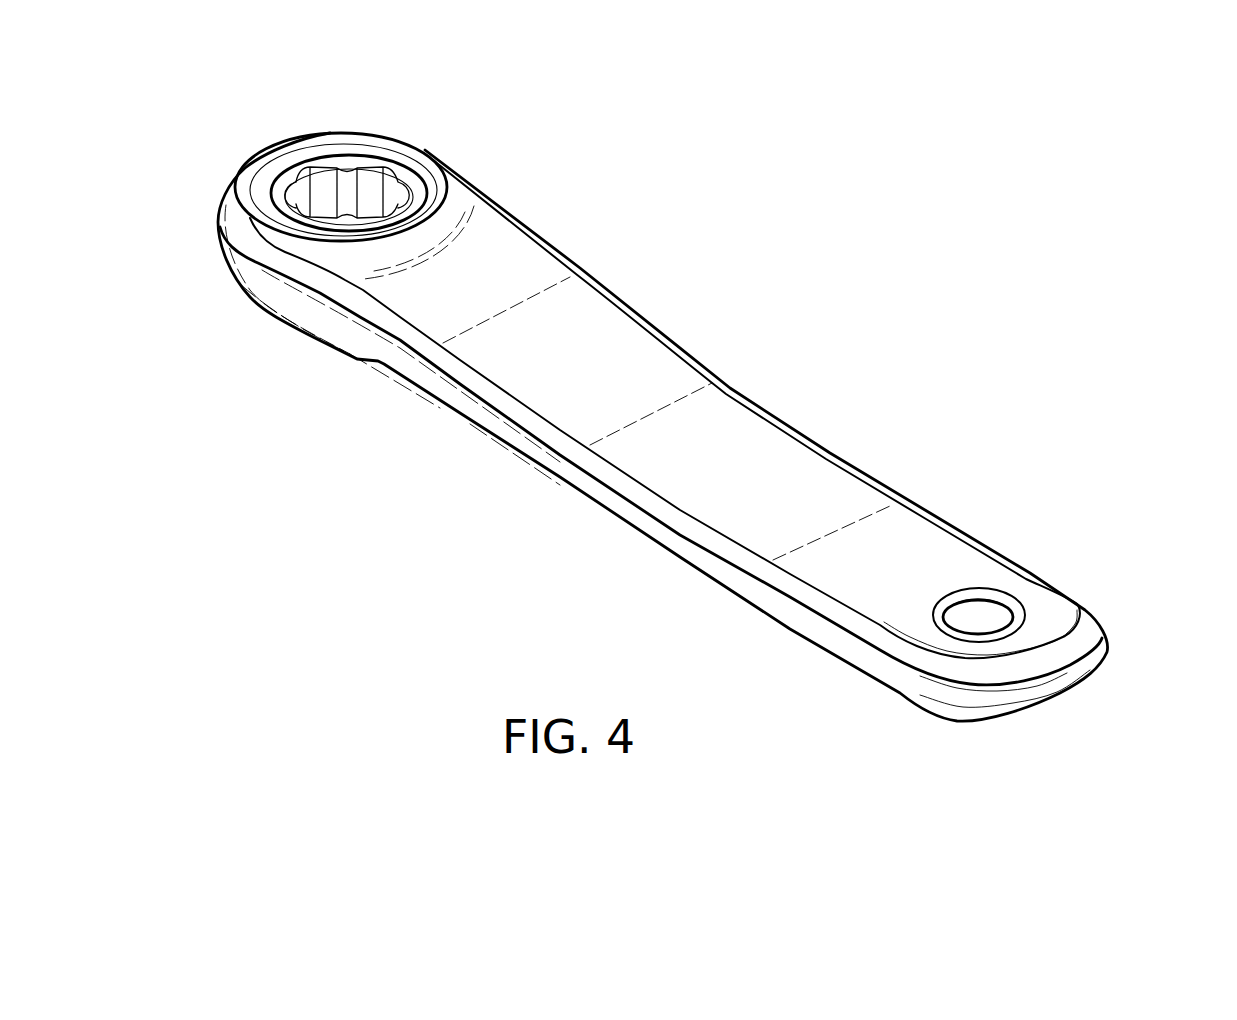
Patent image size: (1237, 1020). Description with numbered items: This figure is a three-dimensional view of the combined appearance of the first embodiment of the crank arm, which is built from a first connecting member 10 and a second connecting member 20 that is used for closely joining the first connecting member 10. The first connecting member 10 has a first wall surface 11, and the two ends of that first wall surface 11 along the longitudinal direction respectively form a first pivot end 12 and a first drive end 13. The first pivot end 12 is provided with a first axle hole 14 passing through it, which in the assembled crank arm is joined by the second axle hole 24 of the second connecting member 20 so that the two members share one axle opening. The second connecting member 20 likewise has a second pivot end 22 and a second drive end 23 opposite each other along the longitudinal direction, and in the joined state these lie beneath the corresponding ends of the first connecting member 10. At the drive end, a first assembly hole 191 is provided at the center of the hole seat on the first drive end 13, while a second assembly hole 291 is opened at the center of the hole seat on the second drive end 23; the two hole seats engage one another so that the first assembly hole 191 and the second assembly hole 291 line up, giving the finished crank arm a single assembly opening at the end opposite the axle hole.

The first connecting member 10 is at (776, 400).
The first wall surface 11 is at (634, 345).
The first pivot end 12 is at (334, 133).
The first drive end 13 is at (1110, 630).
The first axle hole 14 is at (359, 157).
The second connecting member 20 is at (528, 480).
The second pivot end 22 is at (228, 272).
The second drive end 23 is at (1010, 718).
The second axle hole 24 is at (280, 187).
The first assembly hole 191 is at (1050, 574).
The second assembly hole 291 is at (980, 613).